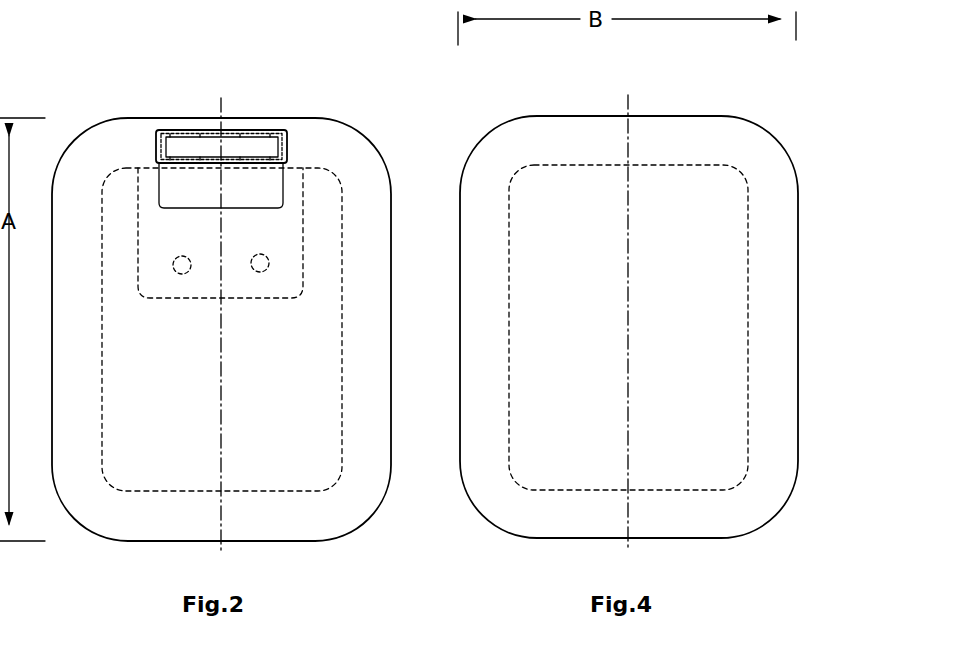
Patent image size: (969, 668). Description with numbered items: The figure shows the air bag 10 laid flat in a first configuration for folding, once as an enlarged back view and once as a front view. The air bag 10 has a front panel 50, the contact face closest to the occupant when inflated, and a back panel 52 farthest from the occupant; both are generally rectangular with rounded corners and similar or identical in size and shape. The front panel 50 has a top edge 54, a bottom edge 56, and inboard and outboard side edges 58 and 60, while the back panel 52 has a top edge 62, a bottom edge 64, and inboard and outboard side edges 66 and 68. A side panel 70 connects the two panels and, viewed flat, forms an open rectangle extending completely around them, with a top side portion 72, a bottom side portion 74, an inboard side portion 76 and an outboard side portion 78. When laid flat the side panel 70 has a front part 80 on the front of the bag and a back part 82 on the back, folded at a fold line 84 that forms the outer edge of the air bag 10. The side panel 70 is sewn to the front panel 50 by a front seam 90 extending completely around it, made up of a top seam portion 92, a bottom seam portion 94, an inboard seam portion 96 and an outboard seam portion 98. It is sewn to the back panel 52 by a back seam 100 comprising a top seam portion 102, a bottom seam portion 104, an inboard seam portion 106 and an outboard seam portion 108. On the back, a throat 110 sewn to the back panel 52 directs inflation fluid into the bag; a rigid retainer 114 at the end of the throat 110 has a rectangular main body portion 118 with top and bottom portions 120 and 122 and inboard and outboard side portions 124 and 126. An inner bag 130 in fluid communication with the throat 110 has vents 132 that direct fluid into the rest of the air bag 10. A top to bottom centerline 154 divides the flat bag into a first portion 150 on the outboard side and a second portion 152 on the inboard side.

In FIG. 2, the air bag 10 is at (372, 522).
In FIG. 4, the air bag 10 is at (772, 533).
In FIG. 4, the front panel 50 is at (547, 468).
In FIG. 2, the back panel 52 is at (129, 474).
In FIG. 4, the top edge 54 is at (670, 163).
In FIG. 4, the bottom edge 56 is at (698, 492).
In FIG. 4, the inboard side edge 58 is at (509, 232).
In FIG. 4, the outboard side edge 60 is at (748, 275).
In FIG. 2, the top edge 62 is at (313, 165).
In FIG. 2, the bottom edge 64 is at (297, 495).
In FIG. 2, the inboard side edge 66 is at (342, 274).
In FIG. 2, the outboard side edge 68 is at (100, 343).
In FIG. 2, the side panel 70 is at (91, 146).
In FIG. 4, the side panel 70 is at (762, 133).
In FIG. 2, the top side portion 72 is at (140, 128).
In FIG. 4, the top side portion 72 is at (572, 142).
In FIG. 2, the bottom side portion 74 is at (167, 517).
In FIG. 4, the bottom side portion 74 is at (565, 512).
In FIG. 2, the inboard side portion 76 is at (370, 438).
In FIG. 4, the inboard side portion 76 is at (485, 343).
In FIG. 2, the outboard side portion 78 is at (80, 393).
In FIG. 4, the outboard side portion 78 is at (790, 380).
In FIG. 4, the front part 80 is at (515, 116).
In FIG. 2, the back part 82 is at (368, 134).
In FIG. 4, the fold line 84 is at (478, 143).
In FIG. 4, the front seam 90 is at (561, 170).
In FIG. 4, the top seam portion 92 is at (602, 165).
In FIG. 4, the bottom seam portion 94 is at (657, 490).
In FIG. 4, the inboard seam portion 96 is at (509, 348).
In FIG. 4, the outboard seam portion 98 is at (747, 320).
In FIG. 2, the back seam 100 is at (106, 313).
In FIG. 2, the top seam portion 102 is at (138, 198).
In FIG. 2, the bottom seam portion 104 is at (183, 490).
In FIG. 2, the inboard seam portion 106 is at (340, 372).
In FIG. 2, the outboard seam portion 108 is at (102, 445).
In FIG. 2, the throat 110 is at (272, 187).
In FIG. 2, the retainer 114 is at (257, 126).
In FIG. 2, the main body portion 118 is at (182, 132).
In FIG. 2, the top portion 120 is at (215, 130).
In FIG. 2, the bottom portion 122 is at (250, 165).
In FIG. 2, the inboard side portion 124 is at (288, 140).
In FIG. 2, the outboard side portion 126 is at (152, 135).
In FIG. 2, the inner bag 130 is at (128, 272).
In FIG. 2, the vents 132 is at (257, 268).
In FIG. 2, the first portion 150 is at (165, 585).
In FIG. 4, the first portion 150 is at (690, 585).
In FIG. 2, the second portion 152 is at (273, 585).
In FIG. 4, the second portion 152 is at (570, 585).
In FIG. 2, the top to bottom centerline 154 is at (222, 98).
In FIG. 4, the top to bottom centerline 154 is at (628, 100).